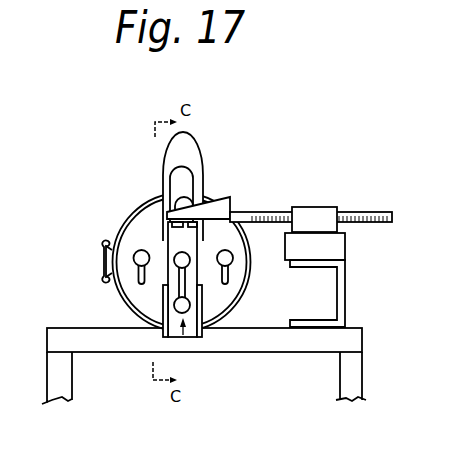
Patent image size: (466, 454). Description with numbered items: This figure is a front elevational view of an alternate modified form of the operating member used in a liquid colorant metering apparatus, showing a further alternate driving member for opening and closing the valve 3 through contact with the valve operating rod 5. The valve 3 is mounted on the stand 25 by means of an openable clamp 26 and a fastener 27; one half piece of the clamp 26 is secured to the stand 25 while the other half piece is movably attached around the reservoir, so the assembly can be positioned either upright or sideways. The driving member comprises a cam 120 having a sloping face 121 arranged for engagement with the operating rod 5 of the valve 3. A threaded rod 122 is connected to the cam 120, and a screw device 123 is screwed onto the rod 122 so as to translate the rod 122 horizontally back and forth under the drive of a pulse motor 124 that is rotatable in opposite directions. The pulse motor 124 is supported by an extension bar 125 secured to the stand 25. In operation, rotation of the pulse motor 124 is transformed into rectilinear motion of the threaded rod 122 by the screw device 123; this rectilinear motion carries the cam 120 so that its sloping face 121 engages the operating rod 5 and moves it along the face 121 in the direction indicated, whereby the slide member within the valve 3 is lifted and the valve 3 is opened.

The valve 3 is at (186, 340).
The valve operating rod 5 is at (183, 199).
The stand 25 is at (45, 370).
The openable clamp 26 is at (135, 210).
The fastener 27 is at (102, 261).
The cam 120 is at (237, 210).
The sloping face 121 is at (218, 197).
The threaded rod 122 is at (279, 212).
The screw device 123 is at (330, 210).
The pulse motor 124 is at (338, 247).
The extension bar 125 is at (345, 297).